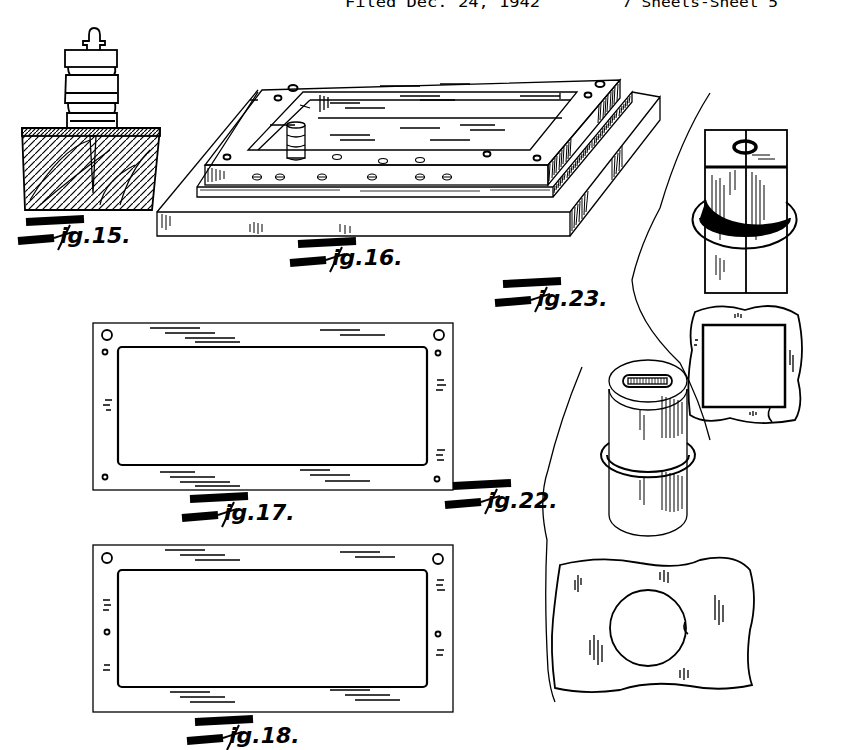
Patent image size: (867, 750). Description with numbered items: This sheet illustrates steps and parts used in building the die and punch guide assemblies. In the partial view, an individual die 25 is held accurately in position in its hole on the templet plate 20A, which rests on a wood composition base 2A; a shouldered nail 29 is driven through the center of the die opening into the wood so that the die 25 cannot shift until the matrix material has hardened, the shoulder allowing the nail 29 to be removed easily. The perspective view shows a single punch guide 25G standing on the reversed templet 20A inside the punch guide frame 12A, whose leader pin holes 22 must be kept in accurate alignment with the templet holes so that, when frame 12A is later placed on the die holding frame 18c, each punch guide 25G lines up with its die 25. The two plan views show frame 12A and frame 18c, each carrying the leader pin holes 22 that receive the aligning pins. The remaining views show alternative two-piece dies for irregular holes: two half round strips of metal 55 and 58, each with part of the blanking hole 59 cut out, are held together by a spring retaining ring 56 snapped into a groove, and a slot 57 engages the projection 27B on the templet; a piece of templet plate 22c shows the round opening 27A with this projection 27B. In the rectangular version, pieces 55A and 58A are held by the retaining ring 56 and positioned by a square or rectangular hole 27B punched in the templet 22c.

In FIG. 15, the wood block 2A is at (153, 168).
In FIG. 15, the templet plate 20A is at (120, 130).
In FIG. 16, the templet plate 20A is at (634, 97).
In FIG. 15, the die 25 is at (65, 61).
In FIG. 15, the shouldered nail 29 is at (86, 33).
In FIG. 16, the punch guide frame 12A is at (470, 85).
In FIG. 17, the punch guide frame 12A is at (453, 387).
In FIG. 16, the leader pin holes 22 is at (295, 85).
In FIG. 17, the leader pin holes 22 is at (110, 331).
In FIG. 18, the leader pin holes 22 is at (110, 553).
In FIG. 16, the punch guide 25G is at (300, 125).
In FIG. 18, the die holding frame 18c is at (447, 602).
In FIG. 23, the rectangular die piece 55A is at (718, 137).
In FIG. 23, the rectangular die piece 58A is at (766, 134).
In FIG. 23, the spring retaining ring 56 is at (700, 234).
In FIG. 22, the spring retaining ring 56 is at (608, 452).
In FIG. 23, the plate 22c is at (775, 320).
In FIG. 22, the plate 22c is at (677, 567).
In FIG. 23, the projection (or square or rectangular hole) on the templet 27B is at (772, 420).
In FIG. 22, the projection (or square or rectangular hole) on the templet 27B is at (687, 628).
In FIG. 22, the circular hole 27A is at (677, 606).
In FIG. 22, the half round strip of metal 55 is at (612, 409).
In FIG. 22, the slot 57 is at (614, 383).
In FIG. 22, the half round strip of metal 58 is at (631, 375).
In FIG. 22, the irregularly shaped hole for blanking 59 is at (655, 376).